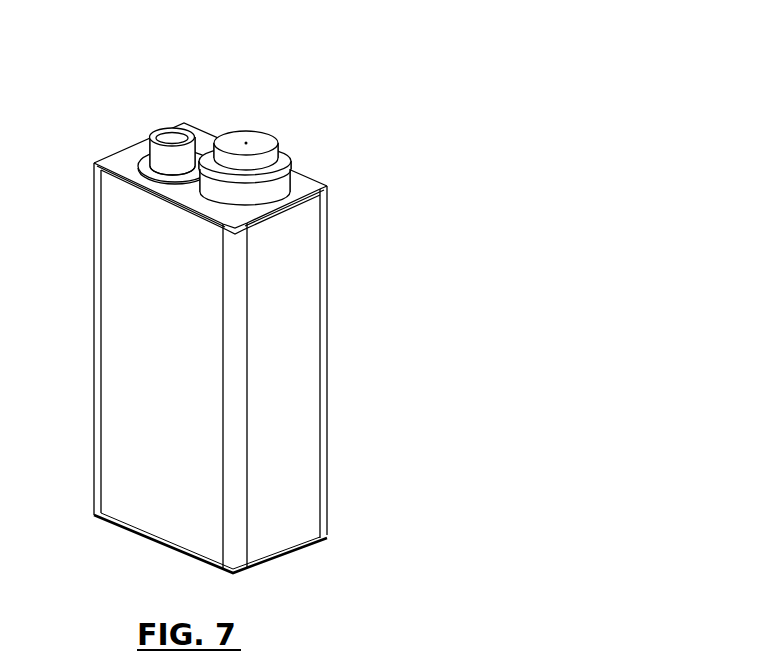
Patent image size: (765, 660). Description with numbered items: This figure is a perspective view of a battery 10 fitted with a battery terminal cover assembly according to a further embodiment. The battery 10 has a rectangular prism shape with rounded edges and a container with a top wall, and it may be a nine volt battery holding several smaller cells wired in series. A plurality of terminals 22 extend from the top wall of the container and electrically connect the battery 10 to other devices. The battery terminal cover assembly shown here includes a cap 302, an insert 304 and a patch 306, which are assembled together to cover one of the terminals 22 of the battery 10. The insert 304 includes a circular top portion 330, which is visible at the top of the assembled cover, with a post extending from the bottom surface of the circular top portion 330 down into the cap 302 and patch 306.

The battery 10 is at (352, 364).
The terminal 22 is at (153, 126).
The insert 304 is at (245, 140).
The circular top portion 330 is at (266, 141).
The cap 302 is at (299, 162).
The patch 306 is at (316, 179).